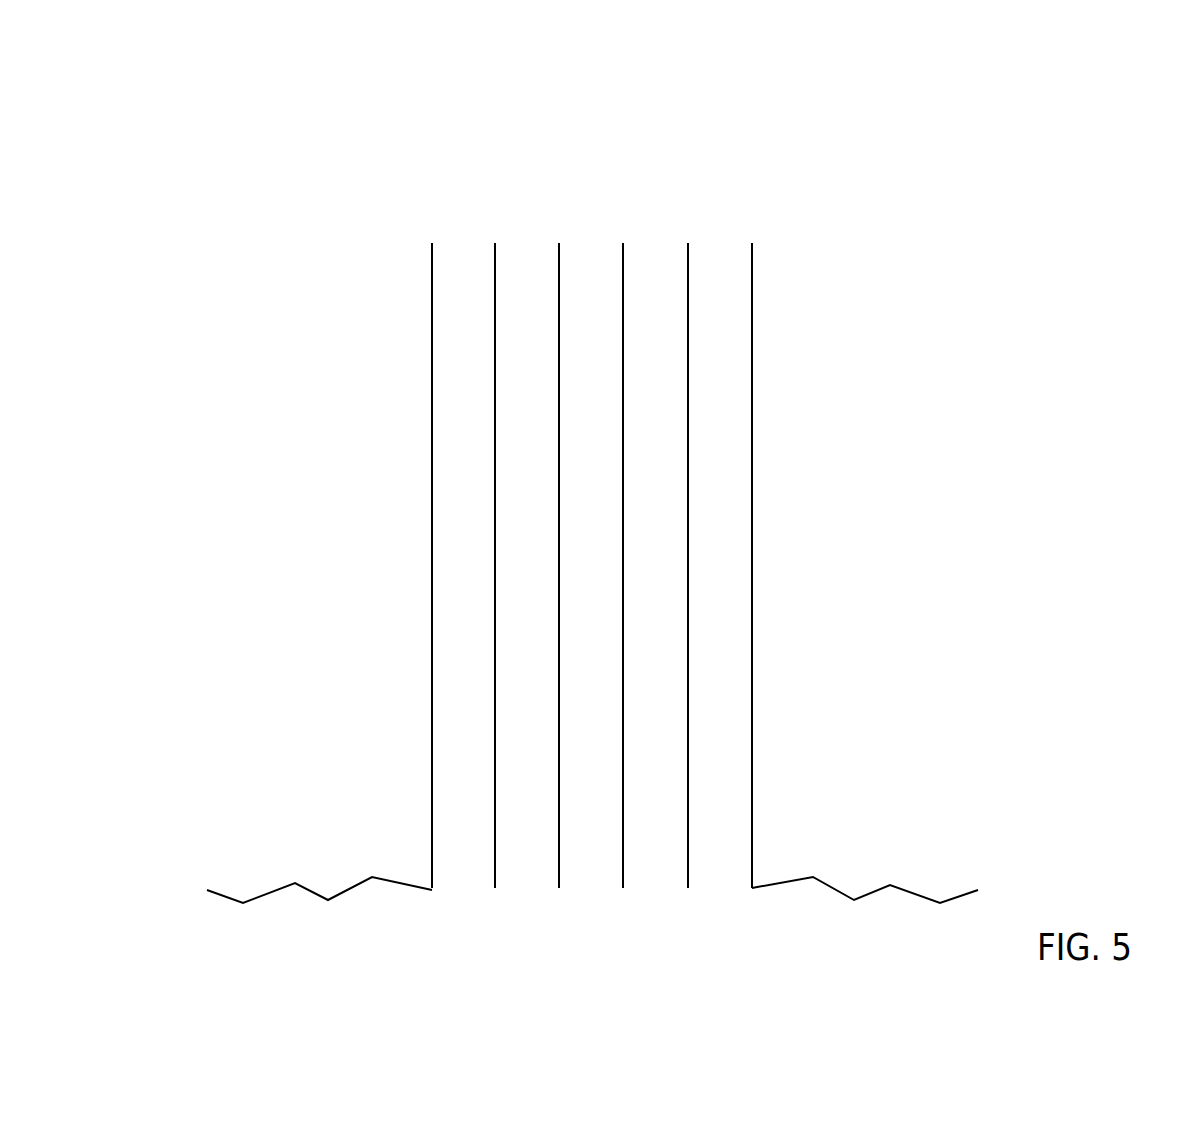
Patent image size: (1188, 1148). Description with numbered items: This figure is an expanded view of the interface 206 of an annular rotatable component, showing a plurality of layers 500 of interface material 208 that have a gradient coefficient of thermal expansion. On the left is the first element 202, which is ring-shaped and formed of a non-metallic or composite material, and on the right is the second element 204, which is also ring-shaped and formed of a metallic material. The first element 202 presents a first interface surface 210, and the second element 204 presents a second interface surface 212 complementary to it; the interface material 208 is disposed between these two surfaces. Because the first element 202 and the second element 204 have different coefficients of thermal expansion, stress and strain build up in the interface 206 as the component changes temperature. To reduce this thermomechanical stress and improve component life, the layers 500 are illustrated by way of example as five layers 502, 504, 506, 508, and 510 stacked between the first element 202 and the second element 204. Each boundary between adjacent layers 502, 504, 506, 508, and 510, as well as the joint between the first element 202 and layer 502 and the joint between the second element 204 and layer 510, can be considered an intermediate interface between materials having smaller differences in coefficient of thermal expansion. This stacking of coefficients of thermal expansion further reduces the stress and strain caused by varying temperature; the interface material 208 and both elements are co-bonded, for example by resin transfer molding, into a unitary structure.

The plurality of layers 500 is at (495, 110).
The interface 206 is at (585, 178).
The first layer 502 is at (463, 257).
The second layer 504 is at (527, 257).
The third layer 506 is at (592, 257).
The fourth layer 508 is at (656, 257).
The fifth layer 510 is at (720, 257).
The first element 202 is at (319, 750).
The second element 204 is at (865, 750).
The first interface surface 210 is at (432, 560).
The second interface surface 212 is at (753, 560).
The interface material 208 is at (723, 873).